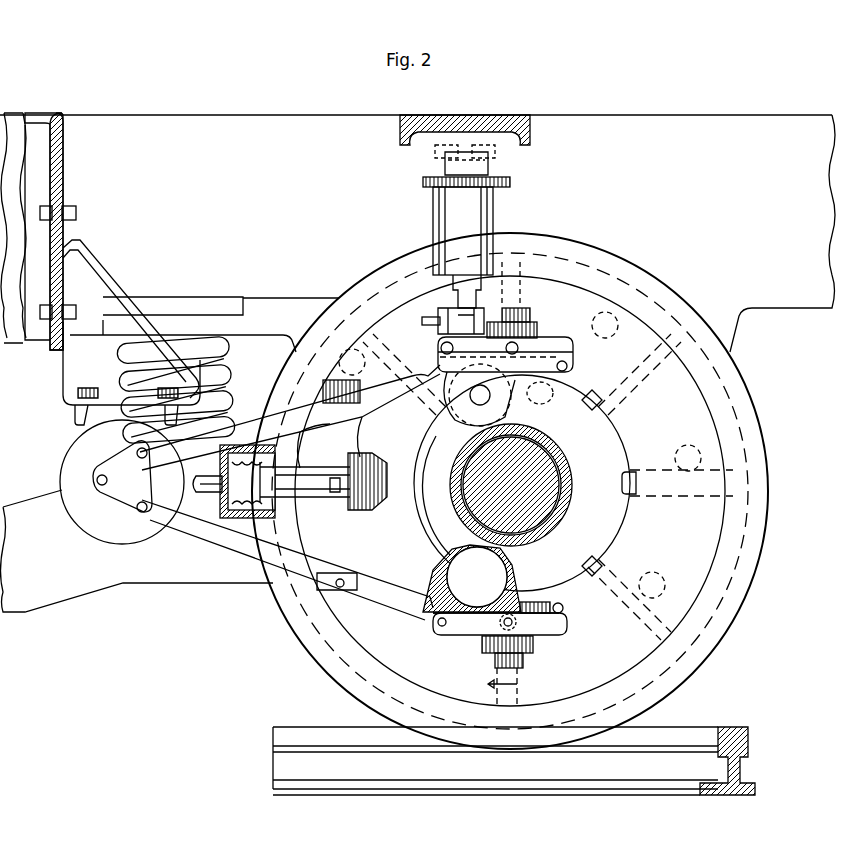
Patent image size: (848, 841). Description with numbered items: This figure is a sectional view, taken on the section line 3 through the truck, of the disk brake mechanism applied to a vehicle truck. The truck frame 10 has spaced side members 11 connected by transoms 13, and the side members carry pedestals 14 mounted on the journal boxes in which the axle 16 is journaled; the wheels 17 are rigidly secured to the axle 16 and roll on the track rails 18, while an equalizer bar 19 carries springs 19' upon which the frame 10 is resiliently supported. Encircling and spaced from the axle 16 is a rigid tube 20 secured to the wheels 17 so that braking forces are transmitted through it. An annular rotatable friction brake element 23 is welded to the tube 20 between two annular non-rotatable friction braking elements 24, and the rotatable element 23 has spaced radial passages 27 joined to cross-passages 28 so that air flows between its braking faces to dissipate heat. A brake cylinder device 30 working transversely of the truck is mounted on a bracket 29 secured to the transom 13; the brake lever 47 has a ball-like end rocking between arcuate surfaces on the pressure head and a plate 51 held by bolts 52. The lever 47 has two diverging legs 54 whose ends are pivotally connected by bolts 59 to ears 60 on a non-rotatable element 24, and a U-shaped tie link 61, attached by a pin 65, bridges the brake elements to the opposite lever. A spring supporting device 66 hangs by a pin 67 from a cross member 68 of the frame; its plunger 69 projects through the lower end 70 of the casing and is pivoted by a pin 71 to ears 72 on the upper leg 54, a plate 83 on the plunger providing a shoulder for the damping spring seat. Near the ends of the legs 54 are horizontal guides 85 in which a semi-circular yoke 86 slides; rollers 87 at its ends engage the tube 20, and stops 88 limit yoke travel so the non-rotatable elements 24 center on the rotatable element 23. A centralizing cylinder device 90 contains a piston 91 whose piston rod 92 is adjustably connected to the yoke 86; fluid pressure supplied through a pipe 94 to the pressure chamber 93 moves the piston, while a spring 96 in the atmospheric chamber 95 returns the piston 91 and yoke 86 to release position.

The truck frame 10 is at (650, 115).
The side members 11 is at (600, 138).
The transoms 13 is at (62, 190).
The pedestals 14 is at (282, 345).
The axle 16 is at (540, 470).
The wheels 17 is at (680, 675).
The track rails 18 is at (273, 758).
The equalizer bar 19 is at (137, 567).
The springs 19' is at (159, 390).
The rigid tube 20 is at (570, 515).
The rotatable friction brake element 23 is at (625, 518).
The non-rotatable friction braking elements 24 is at (690, 588).
The radial passages 27 is at (640, 612).
The cross-passages 28 is at (585, 405).
The bracket 29 is at (100, 276).
The section line 3— 3 is at (509, 624).
The brake cylinder device 30 is at (60, 483).
The brake lever 47 is at (205, 512).
The plate 51 is at (120, 487).
The bolts 52 is at (100, 486).
The legs 54 is at (428, 375).
The bolts 59 is at (530, 312).
The ears 60 is at (537, 330).
The tie link 61 is at (338, 432).
The pin 65 is at (326, 380).
The spring supporting device 66 is at (482, 210).
The pin 67 is at (490, 163).
The cross member 68 is at (478, 115).
The plunger 69 is at (505, 290).
The lower end of casing 70 is at (453, 282).
The pin 71 is at (422, 321).
The ears 72 is at (448, 298).
The plate 83 is at (540, 393).
The guides 85 is at (567, 622).
The yoke 86 is at (440, 470).
The rollers 87 is at (500, 415).
The stops 88 is at (535, 602).
The centralizing cylinder device 90 is at (248, 445).
The piston 91 is at (262, 515).
The piston rod 92 is at (352, 512).
The pressure chamber 93 is at (198, 486).
The pipe 94 is at (212, 470).
The chamber 95 is at (290, 522).
The spring 96 is at (248, 512).